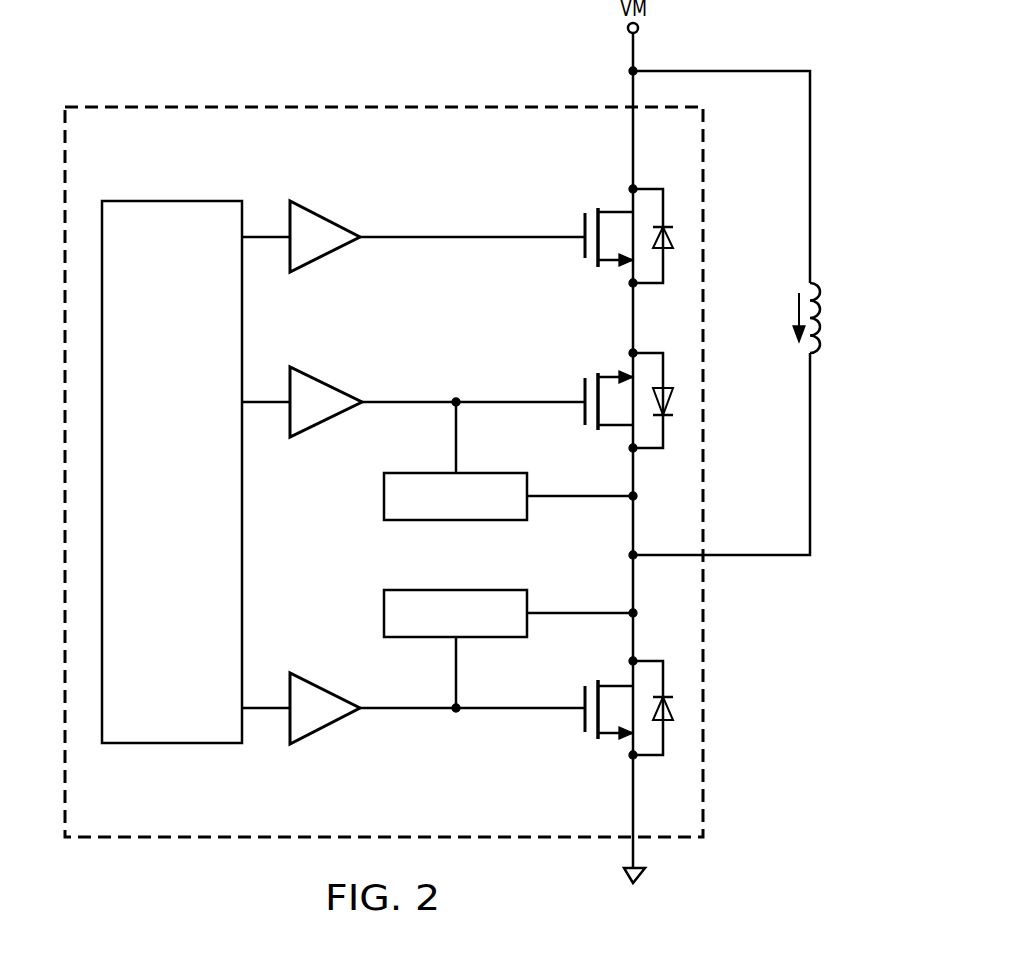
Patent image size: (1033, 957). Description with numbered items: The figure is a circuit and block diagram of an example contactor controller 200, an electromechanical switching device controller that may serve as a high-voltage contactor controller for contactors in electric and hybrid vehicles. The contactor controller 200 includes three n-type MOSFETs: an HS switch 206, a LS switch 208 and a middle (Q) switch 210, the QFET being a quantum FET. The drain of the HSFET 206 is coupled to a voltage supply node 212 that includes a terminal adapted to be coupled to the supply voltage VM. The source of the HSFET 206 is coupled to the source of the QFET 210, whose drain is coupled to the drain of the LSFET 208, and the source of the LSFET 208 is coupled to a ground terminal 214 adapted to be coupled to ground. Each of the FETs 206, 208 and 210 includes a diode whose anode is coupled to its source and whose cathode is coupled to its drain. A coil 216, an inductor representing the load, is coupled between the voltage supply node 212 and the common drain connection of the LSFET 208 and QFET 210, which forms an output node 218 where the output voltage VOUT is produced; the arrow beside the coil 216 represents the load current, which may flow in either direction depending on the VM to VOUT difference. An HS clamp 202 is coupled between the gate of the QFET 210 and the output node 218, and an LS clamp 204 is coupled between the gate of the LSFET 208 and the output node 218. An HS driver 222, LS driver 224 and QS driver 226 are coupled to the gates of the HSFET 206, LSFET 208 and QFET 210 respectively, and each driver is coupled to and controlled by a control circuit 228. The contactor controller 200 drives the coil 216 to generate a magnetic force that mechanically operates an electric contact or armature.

The contactor controller 200 is at (239, 101).
The HS clamp 202 is at (432, 520).
The LS clamp 204 is at (478, 590).
The HS switch 206 is at (584, 247).
The LS switch 208 is at (584, 720).
The middle (Q) switch 210 is at (584, 412).
The voltage supply node 212 is at (720, 71).
The ground terminal 214 is at (625, 877).
The coil 216 is at (828, 308).
The output node 218 is at (755, 556).
The HS driver 222 is at (325, 217).
The LS driver 224 is at (327, 728).
The QS driver 226 is at (323, 380).
The control circuit 228 is at (195, 522).